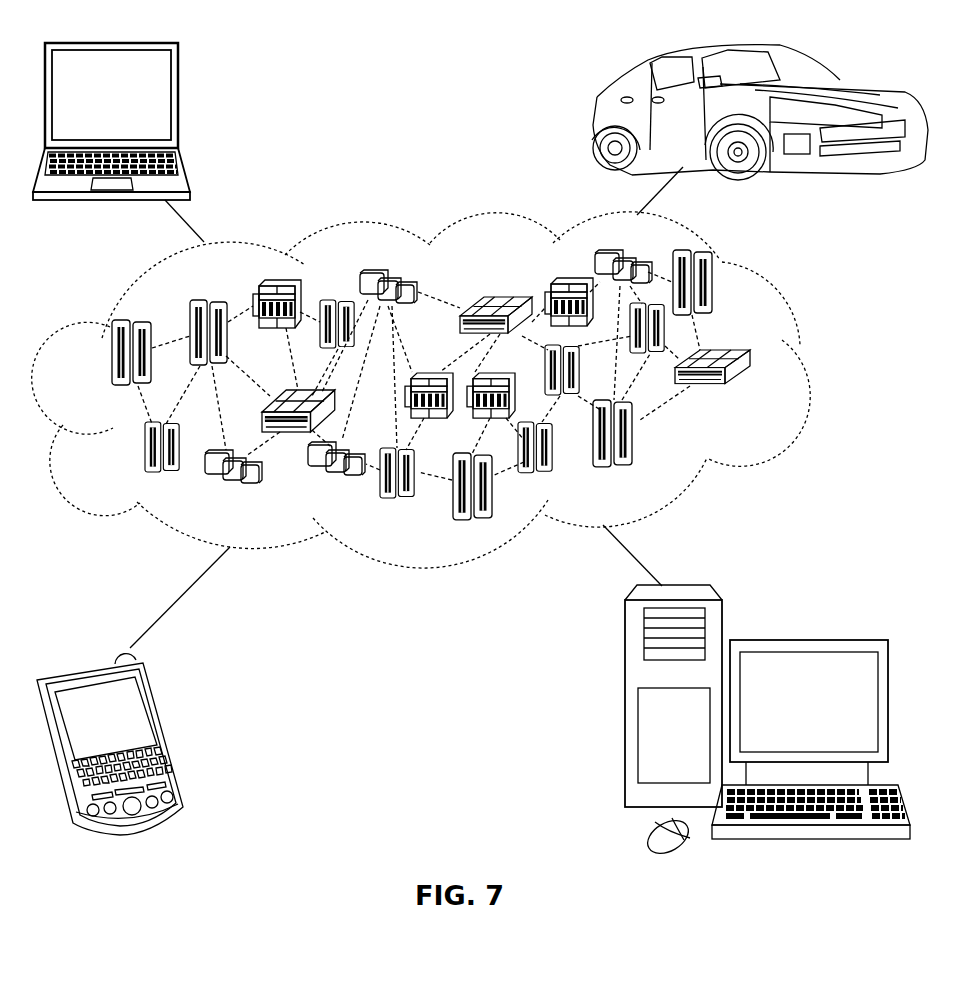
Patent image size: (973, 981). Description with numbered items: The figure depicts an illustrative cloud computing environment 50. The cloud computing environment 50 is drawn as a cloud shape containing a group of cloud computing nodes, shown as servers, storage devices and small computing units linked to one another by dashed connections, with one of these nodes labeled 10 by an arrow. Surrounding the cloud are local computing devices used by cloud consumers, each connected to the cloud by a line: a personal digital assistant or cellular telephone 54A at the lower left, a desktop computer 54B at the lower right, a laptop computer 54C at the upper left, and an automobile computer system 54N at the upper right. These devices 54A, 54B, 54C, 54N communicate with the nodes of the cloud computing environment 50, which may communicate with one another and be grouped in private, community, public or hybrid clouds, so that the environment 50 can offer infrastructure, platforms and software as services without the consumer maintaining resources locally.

The cloud computing node 10 is at (481, 385).
The cloud computing environment 50 is at (815, 362).
The personal digital assistant or cellular telephone 54A is at (165, 727).
The desktop computer 54B is at (808, 640).
The laptop computer 54C is at (178, 98).
The automobile computer system 54N is at (596, 119).